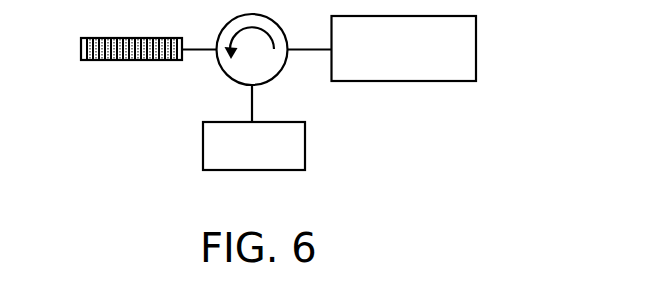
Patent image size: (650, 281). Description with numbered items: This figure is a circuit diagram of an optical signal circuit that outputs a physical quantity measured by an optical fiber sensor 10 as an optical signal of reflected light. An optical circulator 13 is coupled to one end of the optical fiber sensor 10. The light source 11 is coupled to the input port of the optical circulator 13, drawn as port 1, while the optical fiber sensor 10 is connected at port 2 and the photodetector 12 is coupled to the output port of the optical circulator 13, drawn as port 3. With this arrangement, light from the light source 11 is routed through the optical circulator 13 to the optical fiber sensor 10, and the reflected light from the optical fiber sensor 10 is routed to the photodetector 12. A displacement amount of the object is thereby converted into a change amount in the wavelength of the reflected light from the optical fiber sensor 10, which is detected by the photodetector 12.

The first port of circulator 1 is at (310, 34).
The second port of circulator 2 is at (199, 34).
The third port of circulator 3 is at (241, 103).
The optical fiber sensor 10 is at (132, 61).
The light source 11 is at (476, 50).
The photodetector 12 is at (203, 143).
The optical circulator 13 is at (284, 67).